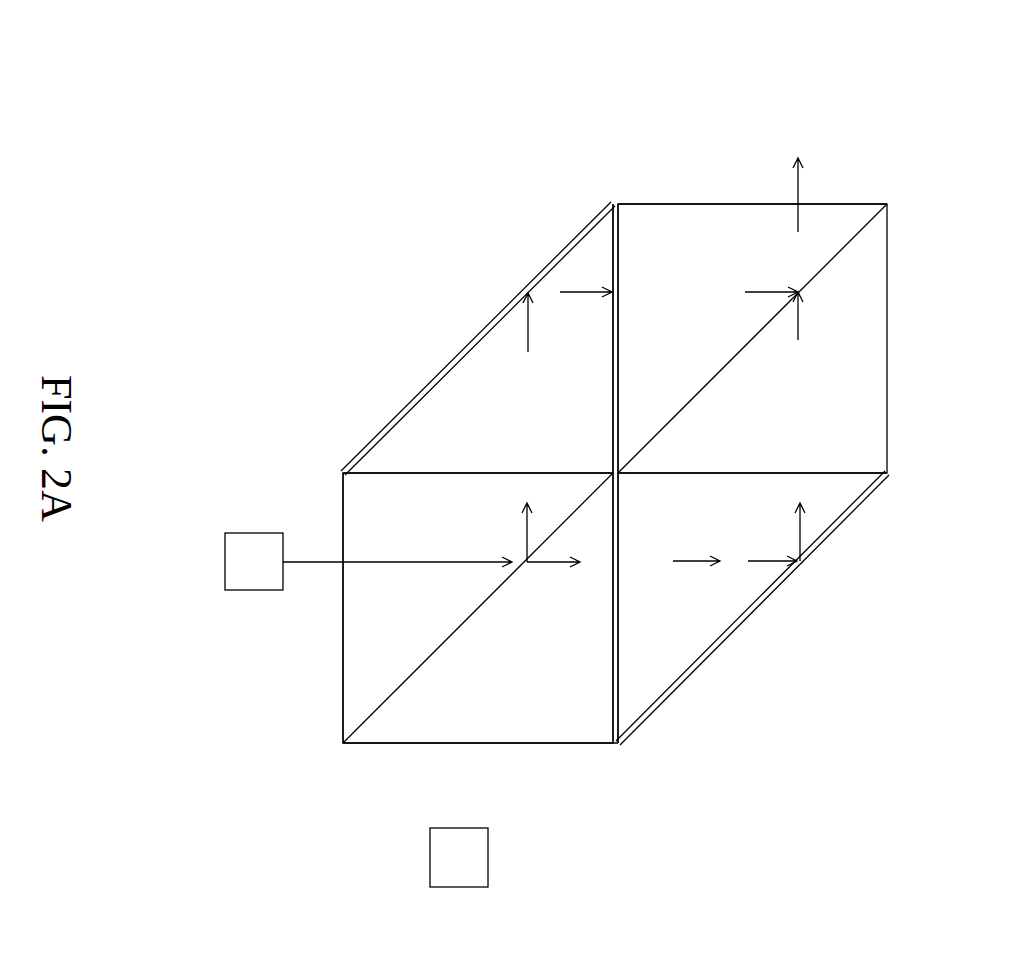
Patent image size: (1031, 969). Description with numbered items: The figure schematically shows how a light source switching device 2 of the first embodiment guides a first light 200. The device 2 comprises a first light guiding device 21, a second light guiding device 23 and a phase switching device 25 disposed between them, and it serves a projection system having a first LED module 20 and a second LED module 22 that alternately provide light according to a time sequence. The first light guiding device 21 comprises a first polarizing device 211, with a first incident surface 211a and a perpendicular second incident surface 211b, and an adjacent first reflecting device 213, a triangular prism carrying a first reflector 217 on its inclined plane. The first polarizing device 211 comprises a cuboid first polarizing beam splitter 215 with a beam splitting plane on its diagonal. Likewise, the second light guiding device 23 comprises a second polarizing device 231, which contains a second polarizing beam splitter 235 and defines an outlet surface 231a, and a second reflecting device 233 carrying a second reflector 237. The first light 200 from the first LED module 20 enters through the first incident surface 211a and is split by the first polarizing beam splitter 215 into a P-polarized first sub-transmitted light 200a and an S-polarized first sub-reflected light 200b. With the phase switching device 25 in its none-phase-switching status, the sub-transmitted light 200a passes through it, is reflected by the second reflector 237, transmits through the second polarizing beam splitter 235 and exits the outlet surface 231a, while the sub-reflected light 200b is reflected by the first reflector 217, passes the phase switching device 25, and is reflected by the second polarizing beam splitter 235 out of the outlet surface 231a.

The light source switching device 2 is at (608, 107).
The first light emitting diode module 20 is at (242, 590).
The first light guiding device 21 is at (215, 368).
The second LED module 22 is at (478, 828).
The second light guiding device 23 is at (935, 255).
The phase switching device 25 is at (613, 204).
The first light 200 is at (353, 560).
The first sub-transmitted light 200a is at (550, 565).
The first sub-reflected light 200b is at (525, 540).
The first polarizing device 211 is at (343, 650).
The first incident surface 211a is at (340, 485).
The second incident surface 211b is at (525, 745).
The first reflecting device 213 is at (422, 428).
The first polarizing beam splitter 215 is at (410, 677).
The first reflector 217 is at (500, 312).
The second polarizing device 231 is at (882, 310).
The outlet surface 231a is at (817, 202).
The second reflecting device 233 is at (830, 513).
The second polarizing beam splitter 235 is at (867, 227).
The second reflector 237 is at (738, 627).